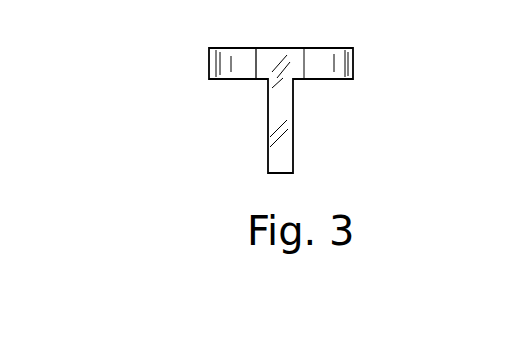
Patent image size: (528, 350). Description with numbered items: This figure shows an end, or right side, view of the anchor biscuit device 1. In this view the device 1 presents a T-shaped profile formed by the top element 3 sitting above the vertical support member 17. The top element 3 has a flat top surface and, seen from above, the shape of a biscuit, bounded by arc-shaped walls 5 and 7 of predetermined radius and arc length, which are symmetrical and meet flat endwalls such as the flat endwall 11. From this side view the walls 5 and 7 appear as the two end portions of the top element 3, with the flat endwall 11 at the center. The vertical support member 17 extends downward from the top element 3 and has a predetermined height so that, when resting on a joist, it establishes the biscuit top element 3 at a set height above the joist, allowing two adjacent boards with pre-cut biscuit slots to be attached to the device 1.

The anchor biscuit device 1 is at (356, 108).
The top element 3 is at (222, 49).
The wall 5 is at (343, 62).
The wall 7 is at (218, 60).
The flat endwall 11 is at (282, 49).
The vertical support member 17 is at (286, 143).